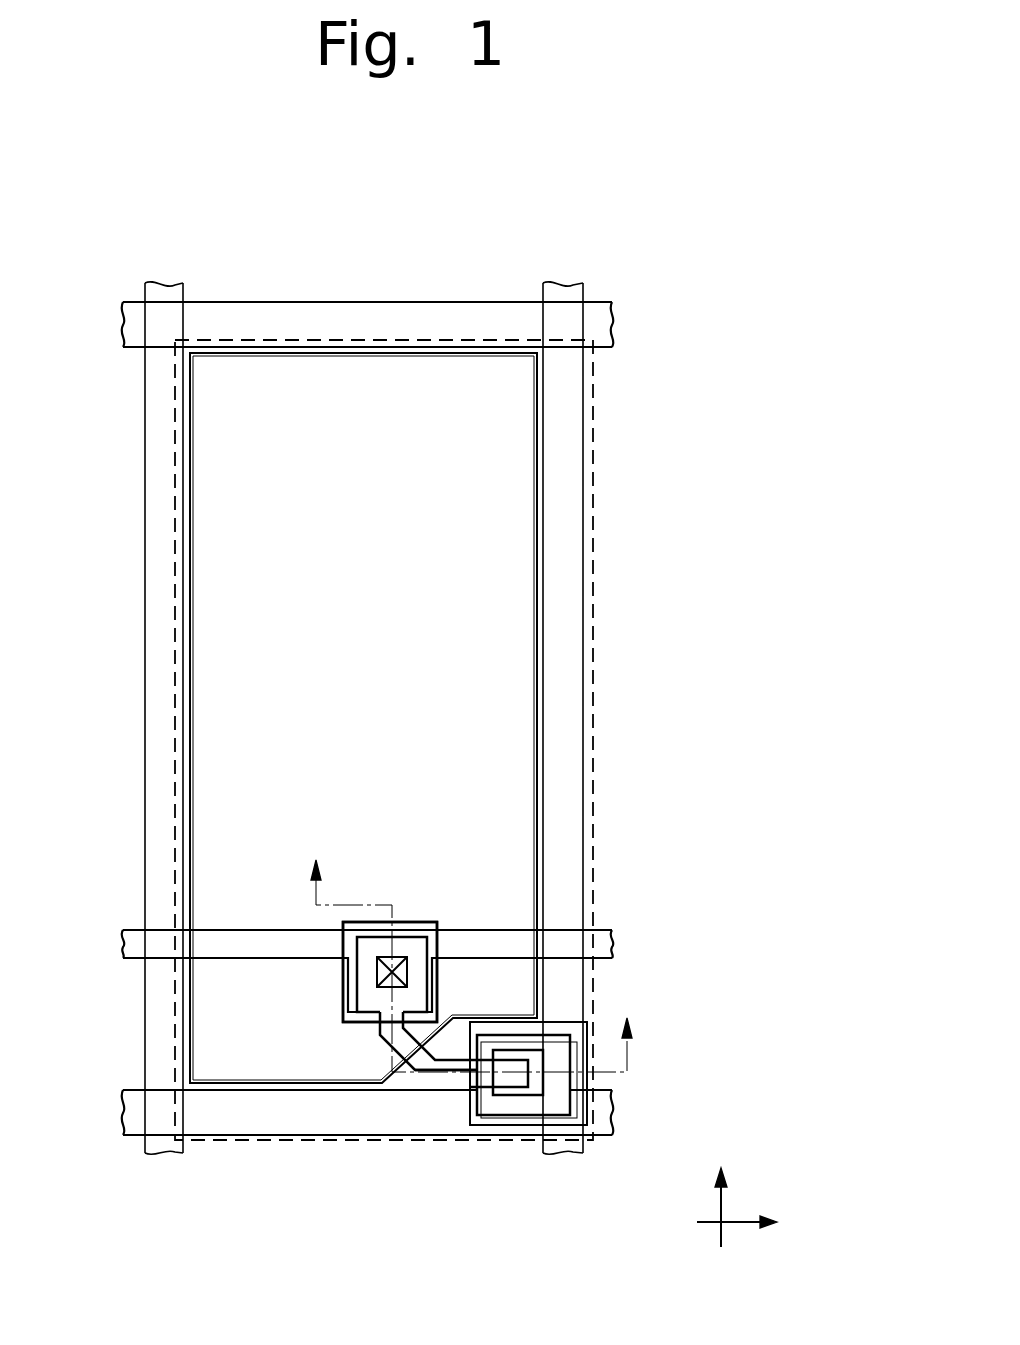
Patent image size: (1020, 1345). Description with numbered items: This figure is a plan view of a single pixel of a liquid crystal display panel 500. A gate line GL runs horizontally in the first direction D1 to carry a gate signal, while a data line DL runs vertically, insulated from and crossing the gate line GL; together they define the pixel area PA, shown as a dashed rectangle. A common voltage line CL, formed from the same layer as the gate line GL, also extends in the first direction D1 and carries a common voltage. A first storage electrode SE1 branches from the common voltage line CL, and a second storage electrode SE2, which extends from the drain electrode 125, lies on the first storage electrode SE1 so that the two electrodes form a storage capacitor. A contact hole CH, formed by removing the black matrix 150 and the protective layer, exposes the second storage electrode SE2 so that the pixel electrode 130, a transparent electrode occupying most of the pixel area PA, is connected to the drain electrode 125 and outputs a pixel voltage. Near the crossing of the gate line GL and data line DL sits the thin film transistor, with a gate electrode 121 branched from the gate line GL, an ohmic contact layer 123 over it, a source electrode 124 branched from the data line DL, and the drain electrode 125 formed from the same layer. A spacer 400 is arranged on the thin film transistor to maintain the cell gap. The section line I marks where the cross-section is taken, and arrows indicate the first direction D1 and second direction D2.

The liquid crystal display panel 500 is at (610, 179).
The data line DL is at (563, 292).
The pixel area PA is at (594, 483).
The pixel electrode 130 is at (540, 748).
The common voltage line CL is at (123, 940).
The gate line GL is at (610, 1108).
The first storage electrode SE1 is at (343, 1005).
The second storage electrode SE2 is at (355, 985).
The black matrix 150 is at (443, 940).
The contact hole CH is at (397, 957).
The gate electrode 121 is at (477, 1092).
The drain electrode 125 is at (435, 1080).
The ohmic contact layer 123 is at (487, 1126).
The source electrode 124 is at (505, 1118).
The spacer 400 is at (590, 1050).
The section line I-I' I is at (474, 950).
The first direction D1 is at (717, 1207).
The second direction D2 is at (723, 1265).